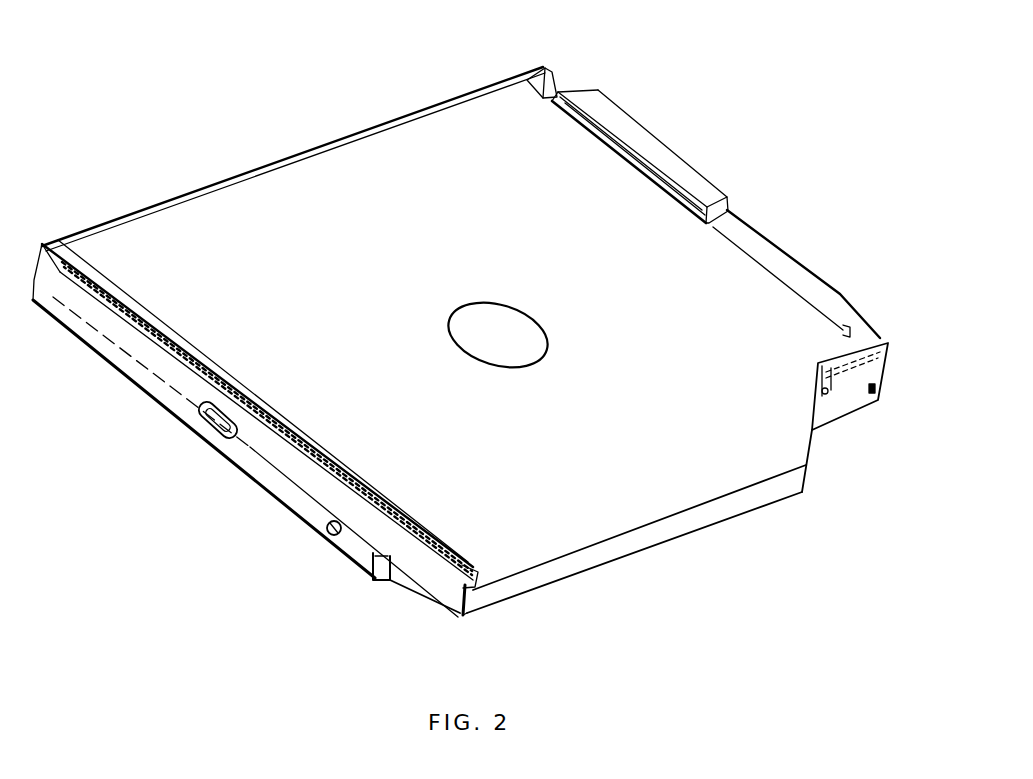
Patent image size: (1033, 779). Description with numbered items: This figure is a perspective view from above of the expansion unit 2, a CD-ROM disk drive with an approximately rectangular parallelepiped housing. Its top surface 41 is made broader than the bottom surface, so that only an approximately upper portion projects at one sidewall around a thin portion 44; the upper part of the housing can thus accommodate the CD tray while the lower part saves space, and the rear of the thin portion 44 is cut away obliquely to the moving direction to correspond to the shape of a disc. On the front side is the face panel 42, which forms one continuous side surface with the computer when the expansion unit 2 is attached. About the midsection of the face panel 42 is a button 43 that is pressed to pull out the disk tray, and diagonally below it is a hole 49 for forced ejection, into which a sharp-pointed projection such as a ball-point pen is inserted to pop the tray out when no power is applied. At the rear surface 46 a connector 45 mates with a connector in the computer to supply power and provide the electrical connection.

The expansion unit 2 is at (698, 80).
The top surface 41 is at (290, 186).
The face panel 42 is at (255, 468).
The button 43 is at (190, 426).
The thin portion 44 is at (582, 560).
The connector 45 is at (692, 167).
The rear surface 46 is at (823, 293).
The hole 49 is at (327, 537).